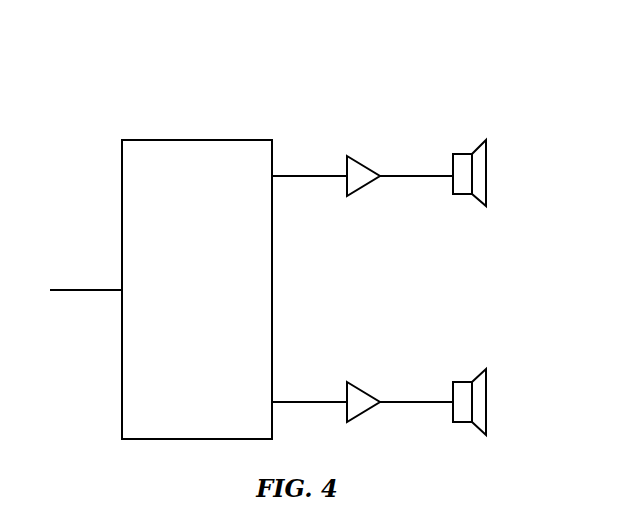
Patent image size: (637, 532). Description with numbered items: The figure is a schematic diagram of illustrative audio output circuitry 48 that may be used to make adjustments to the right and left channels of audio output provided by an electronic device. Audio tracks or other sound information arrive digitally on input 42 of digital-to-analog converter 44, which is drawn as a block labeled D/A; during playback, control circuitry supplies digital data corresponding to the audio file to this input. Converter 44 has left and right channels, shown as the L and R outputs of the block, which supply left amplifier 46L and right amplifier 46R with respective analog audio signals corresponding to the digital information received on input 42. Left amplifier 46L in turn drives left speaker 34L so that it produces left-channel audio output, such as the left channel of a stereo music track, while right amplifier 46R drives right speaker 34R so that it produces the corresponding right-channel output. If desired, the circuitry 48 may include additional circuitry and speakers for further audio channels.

The audio output circuitry 48 is at (362, 38).
The digital-to-analog converter 44 is at (187, 140).
The input 42 is at (80, 290).
The left amplifier 46L is at (361, 160).
The right amplifier 46R is at (359, 385).
The left speaker 34L is at (479, 145).
The right speaker 34R is at (478, 372).